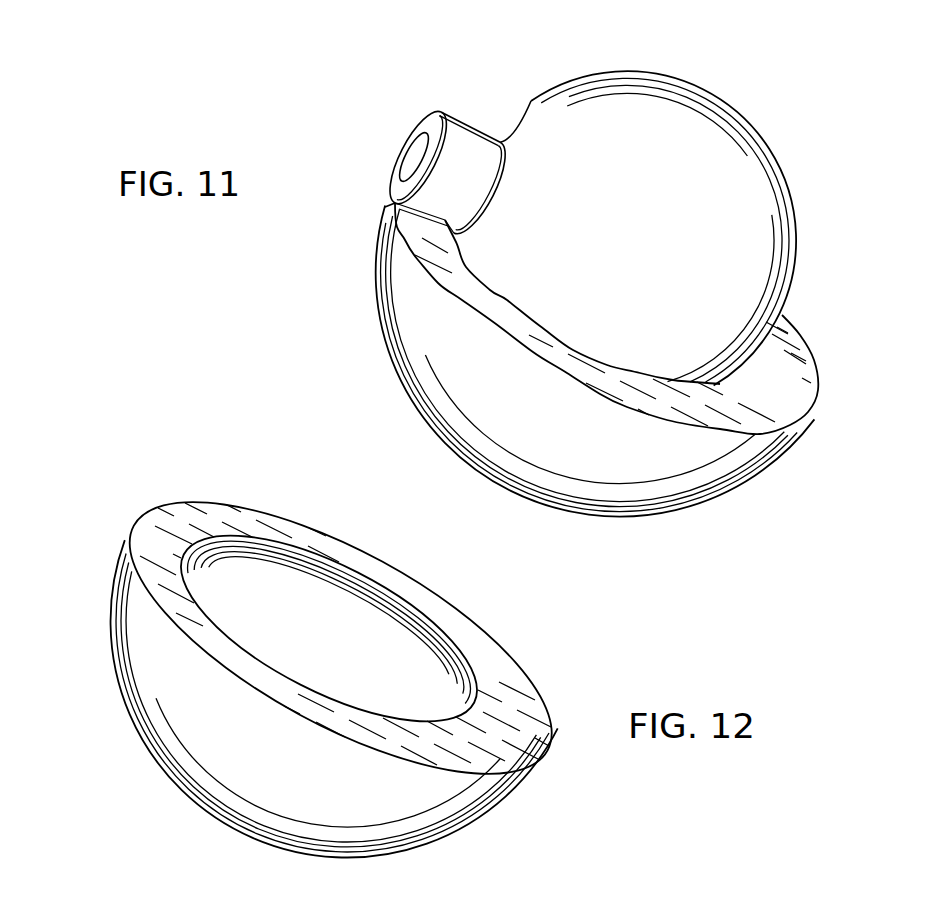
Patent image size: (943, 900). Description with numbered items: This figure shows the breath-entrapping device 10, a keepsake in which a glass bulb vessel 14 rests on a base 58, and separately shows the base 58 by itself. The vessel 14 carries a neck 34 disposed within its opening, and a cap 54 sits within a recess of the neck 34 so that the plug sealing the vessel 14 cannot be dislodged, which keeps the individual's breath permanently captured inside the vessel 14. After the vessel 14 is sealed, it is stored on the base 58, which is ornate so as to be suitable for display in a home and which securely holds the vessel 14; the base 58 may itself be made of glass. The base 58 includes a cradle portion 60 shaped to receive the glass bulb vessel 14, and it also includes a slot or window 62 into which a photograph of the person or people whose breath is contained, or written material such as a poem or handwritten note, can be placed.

In FIG. 11, the device 10 is at (506, 75).
In FIG. 11, the vessel 14 is at (690, 88).
In FIG. 11, the neck 34 is at (427, 123).
In FIG. 11, the cap 54 is at (410, 152).
In FIG. 11, the base 58 is at (379, 322).
In FIG. 12, the base 58 is at (116, 675).
In FIG. 12, the cradle portion 60 is at (347, 620).
In FIG. 12, the slot or window 62 is at (692, 898).